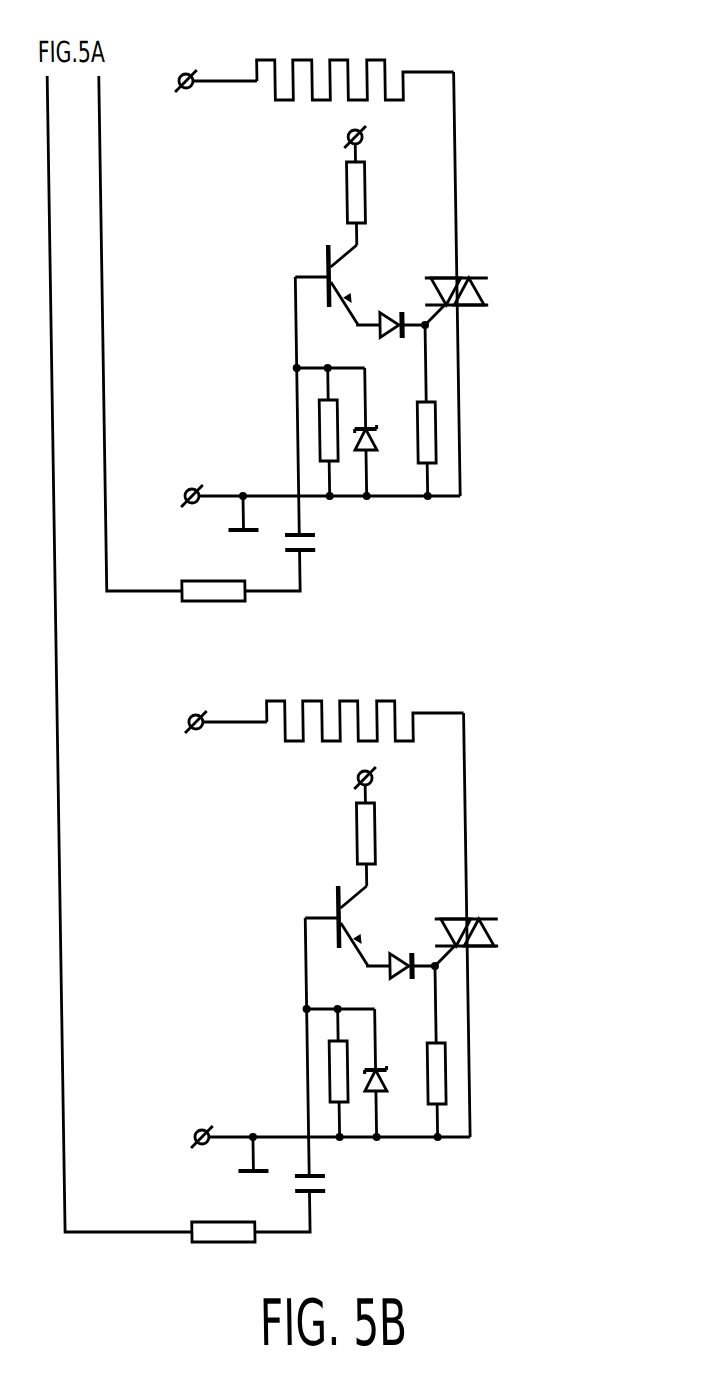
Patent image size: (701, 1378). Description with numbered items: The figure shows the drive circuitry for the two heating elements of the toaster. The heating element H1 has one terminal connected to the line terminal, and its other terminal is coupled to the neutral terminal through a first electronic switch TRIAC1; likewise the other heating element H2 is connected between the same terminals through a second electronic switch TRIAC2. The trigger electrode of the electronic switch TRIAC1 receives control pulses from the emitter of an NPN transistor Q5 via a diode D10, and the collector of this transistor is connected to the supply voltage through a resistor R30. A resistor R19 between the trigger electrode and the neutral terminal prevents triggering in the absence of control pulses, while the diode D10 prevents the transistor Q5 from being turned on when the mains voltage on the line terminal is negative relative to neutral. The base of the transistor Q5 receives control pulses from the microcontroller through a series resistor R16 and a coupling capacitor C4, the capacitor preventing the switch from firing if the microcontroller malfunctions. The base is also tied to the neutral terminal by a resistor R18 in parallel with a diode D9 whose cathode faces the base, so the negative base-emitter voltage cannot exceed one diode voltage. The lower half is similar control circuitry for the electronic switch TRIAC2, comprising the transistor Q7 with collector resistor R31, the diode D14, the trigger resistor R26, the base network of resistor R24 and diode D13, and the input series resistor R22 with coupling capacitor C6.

The heating element H1 is at (389, 72).
The heating element H2 is at (365, 696).
The resistor R30 is at (344, 183).
The resistor R31 is at (329, 833).
The NPN transistor Q5 is at (322, 253).
The transistor Q7 is at (341, 922).
The first electronic switch TRIAC1 is at (474, 278).
The second electronic switch TRIAC2 is at (498, 914).
The diode D10 is at (385, 338).
The diode D14 is at (411, 995).
The resistor R18 is at (313, 438).
The resistor R24 is at (300, 1073).
The diode D9 is at (371, 445).
The zener diode D13 is at (396, 1073).
The resistor R19 is at (430, 440).
The resistor R26 is at (477, 1051).
The coupling capacitor C4 is at (307, 540).
The capacitor C6 is at (339, 1188).
The series resistor R16 is at (184, 587).
The resistor R22 is at (216, 1208).